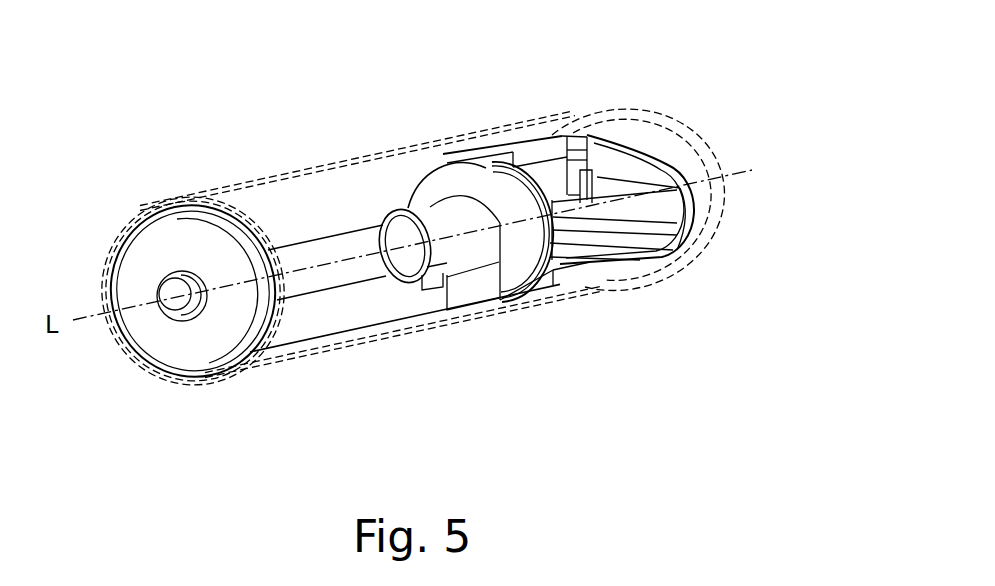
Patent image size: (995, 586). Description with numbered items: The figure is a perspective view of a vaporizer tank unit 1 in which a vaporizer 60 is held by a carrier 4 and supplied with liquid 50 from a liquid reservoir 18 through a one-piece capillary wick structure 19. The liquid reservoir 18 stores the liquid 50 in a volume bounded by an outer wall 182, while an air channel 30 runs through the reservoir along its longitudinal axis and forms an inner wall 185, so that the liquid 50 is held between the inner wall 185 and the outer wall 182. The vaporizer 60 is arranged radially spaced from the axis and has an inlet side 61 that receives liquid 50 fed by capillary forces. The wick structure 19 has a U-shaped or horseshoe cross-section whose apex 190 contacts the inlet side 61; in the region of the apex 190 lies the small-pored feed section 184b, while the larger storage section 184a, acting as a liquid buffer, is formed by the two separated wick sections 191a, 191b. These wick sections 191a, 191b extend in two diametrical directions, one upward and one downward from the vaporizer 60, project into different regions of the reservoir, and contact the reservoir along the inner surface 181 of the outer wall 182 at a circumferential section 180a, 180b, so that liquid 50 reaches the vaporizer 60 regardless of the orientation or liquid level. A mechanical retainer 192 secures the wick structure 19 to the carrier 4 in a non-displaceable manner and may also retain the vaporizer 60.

The vaporizer tank unit 1 is at (185, 408).
The carrier 4 is at (431, 161).
The liquid reservoir 18 is at (343, 203).
The capillary wick structure 19 is at (500, 165).
The air channel 30 is at (173, 283).
The liquid 50 is at (355, 337).
The vaporizer 60 is at (610, 205).
The inlet side 61 is at (683, 163).
The circumferential section 180a is at (560, 275).
The circumferential section 180b is at (403, 293).
The inner surface 181 is at (443, 167).
The outer wall 182 is at (240, 207).
The storage section 184a is at (548, 258).
The feed section 184b is at (462, 180).
The inner wall 185 is at (317, 255).
The apex 190 is at (517, 170).
The wick section 191a is at (520, 283).
The wick section 191b is at (442, 276).
The mechanical retainer 192 is at (590, 167).